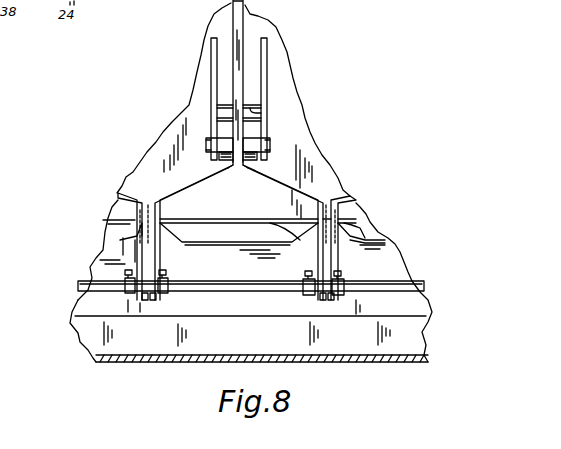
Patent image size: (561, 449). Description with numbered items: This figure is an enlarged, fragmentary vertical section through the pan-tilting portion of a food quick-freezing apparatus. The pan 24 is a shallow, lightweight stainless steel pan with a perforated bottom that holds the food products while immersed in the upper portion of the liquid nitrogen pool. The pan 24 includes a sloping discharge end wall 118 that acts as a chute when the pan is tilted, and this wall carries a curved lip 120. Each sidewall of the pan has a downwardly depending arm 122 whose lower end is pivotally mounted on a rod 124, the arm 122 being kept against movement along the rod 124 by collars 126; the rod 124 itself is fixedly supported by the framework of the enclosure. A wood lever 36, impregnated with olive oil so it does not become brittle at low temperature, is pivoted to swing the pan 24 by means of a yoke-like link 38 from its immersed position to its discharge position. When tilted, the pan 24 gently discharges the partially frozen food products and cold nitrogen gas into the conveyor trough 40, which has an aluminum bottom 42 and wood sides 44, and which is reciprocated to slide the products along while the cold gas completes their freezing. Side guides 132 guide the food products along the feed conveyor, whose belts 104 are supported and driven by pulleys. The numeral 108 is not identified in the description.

The pan 24 is at (90, 247).
The wood lever 36 is at (242, 12).
The side guides 132 is at (265, 58).
The cross member 108 is at (256, 113).
The belts 104 is at (250, 135).
The yoke-like link 38 is at (166, 195).
The curved lip 120 is at (218, 222).
The sloping discharge end wall 118 is at (189, 261).
The rod 124 is at (424, 284).
The collars 126 is at (125, 291).
The downwardly depending arm 122 is at (335, 262).
The conveyor trough 40 is at (57, 336).
The wood sides 44 is at (413, 342).
The aluminum bottom 42 is at (390, 363).